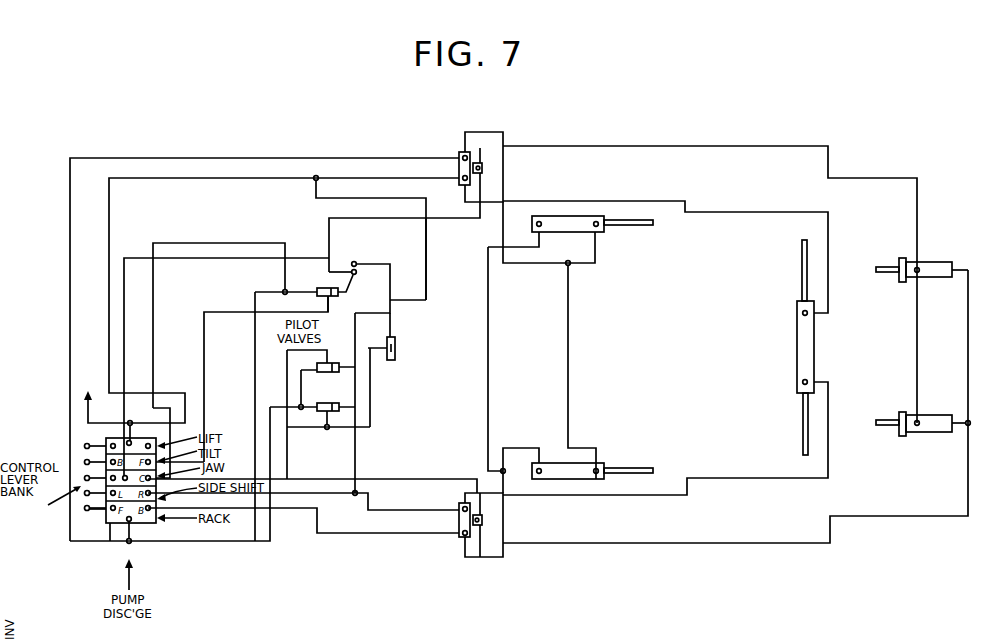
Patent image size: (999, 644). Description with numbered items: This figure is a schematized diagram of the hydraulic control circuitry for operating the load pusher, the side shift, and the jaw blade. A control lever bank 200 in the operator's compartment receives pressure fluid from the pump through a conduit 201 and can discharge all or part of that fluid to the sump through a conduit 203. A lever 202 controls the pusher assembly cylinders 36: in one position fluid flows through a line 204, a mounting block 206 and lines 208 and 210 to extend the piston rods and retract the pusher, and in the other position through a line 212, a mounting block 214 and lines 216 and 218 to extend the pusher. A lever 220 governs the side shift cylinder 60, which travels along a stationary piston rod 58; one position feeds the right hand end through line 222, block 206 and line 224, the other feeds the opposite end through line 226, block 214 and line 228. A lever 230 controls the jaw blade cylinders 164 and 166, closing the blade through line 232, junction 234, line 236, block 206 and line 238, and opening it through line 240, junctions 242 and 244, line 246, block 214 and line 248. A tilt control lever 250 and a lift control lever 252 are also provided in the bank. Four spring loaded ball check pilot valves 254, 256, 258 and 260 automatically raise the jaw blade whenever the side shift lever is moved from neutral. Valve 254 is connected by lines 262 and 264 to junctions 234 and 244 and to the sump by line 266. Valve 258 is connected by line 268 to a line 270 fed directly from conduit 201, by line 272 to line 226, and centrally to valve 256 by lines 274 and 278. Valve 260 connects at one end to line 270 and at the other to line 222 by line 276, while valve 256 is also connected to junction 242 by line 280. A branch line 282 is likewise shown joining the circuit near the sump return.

The line 212 is at (69, 205).
The line 226 is at (109, 209).
The line 240 is at (128, 256).
The line 246 is at (329, 223).
The branch line 282 is at (316, 176).
The mounting block 214 is at (457, 152).
The line 216 is at (504, 177).
The line 248 is at (640, 146).
The line 228 is at (666, 200).
The junction 242 is at (355, 261).
The junction 244 is at (357, 270).
The line 262 is at (300, 289).
The line 264 is at (345, 290).
The pilot valve 254 is at (332, 298).
The line 272 is at (428, 286).
The line 280 is at (428, 300).
The pilot valve 256 is at (396, 346).
The junction 234 is at (283, 290).
The line 232 is at (154, 308).
The line 266 is at (205, 331).
The line 236 is at (255, 366).
The line 268 is at (300, 391).
The pilot valve 258 is at (325, 373).
The pilot valve 260 is at (340, 407).
The line 278 is at (329, 421).
The line 274 is at (311, 429).
The line 276 is at (356, 451).
The line 222 is at (372, 504).
The line 204 is at (350, 535).
The mounting block 206 is at (463, 538).
The line 208 is at (504, 516).
The line 224 is at (725, 480).
The line 238 is at (690, 545).
The line 210 is at (490, 399).
The line 218 is at (570, 346).
The pusher assembly cylinders 36 is at (583, 233).
The side shift cylinder 60 is at (797, 381).
The piston rod 58 is at (803, 431).
The jaw blade cylinder 164 is at (935, 278).
The jaw blade cylinder 166 is at (928, 434).
The lift control lever 252 is at (85, 444).
The tilt control lever 250 is at (85, 460).
The lever 230 is at (85, 476).
The control lever bank 200 is at (85, 495).
The lever 220 is at (84, 510).
The lever 202 is at (85, 513).
The conduit 203 is at (134, 440).
The conduit 201 is at (117, 543).
The line 270 is at (238, 543).